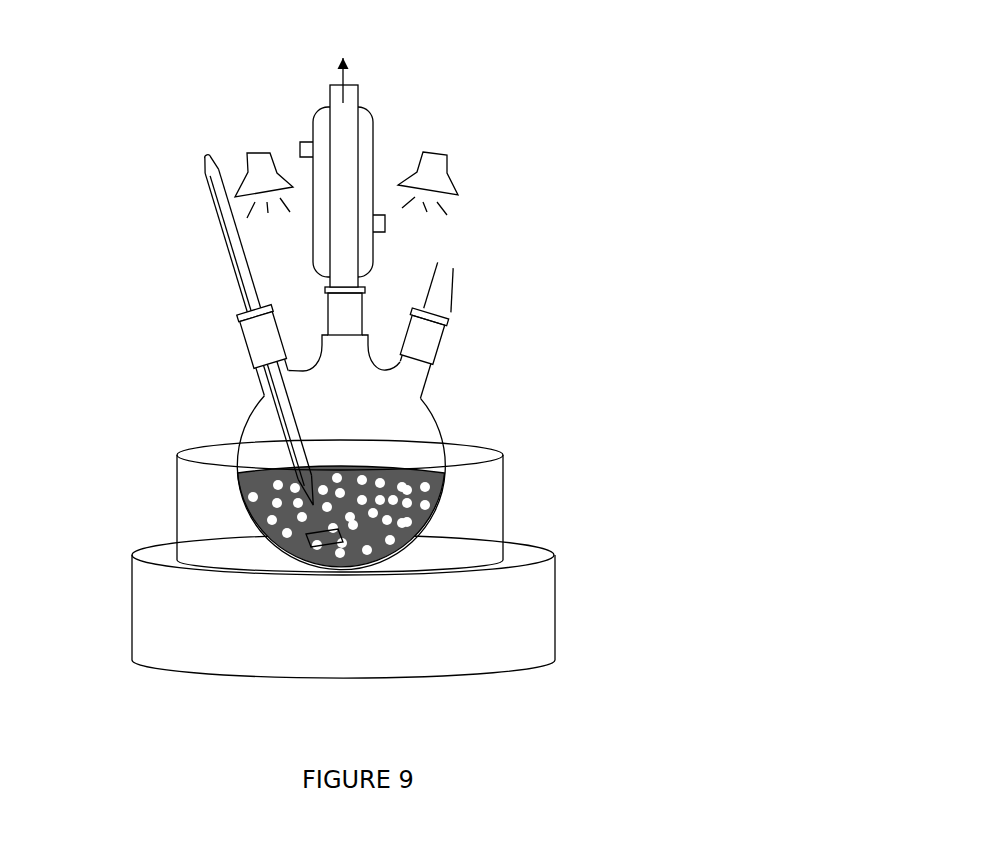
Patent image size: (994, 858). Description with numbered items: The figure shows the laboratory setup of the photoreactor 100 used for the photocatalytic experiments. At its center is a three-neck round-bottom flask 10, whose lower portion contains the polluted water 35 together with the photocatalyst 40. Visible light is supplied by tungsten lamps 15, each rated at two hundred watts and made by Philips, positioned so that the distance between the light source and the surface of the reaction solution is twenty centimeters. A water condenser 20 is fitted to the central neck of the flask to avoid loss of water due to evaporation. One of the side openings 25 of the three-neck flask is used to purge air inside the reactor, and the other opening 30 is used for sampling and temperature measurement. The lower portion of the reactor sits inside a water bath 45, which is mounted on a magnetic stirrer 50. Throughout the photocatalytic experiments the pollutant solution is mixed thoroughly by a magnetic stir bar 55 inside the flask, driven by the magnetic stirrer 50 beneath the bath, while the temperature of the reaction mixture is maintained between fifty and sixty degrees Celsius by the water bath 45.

The photoreactor 100 is at (556, 63).
The three-neck round-bottom flask 10 is at (248, 412).
The tungsten lamps 15 is at (443, 141).
The water condenser 20 is at (371, 110).
The opening 25 is at (443, 286).
The opening 30 is at (226, 322).
The polluted water 35 is at (266, 535).
The photocatalyst 40 is at (250, 500).
The water bath 45 is at (493, 445).
The magnetic stirrer 50 is at (550, 540).
The magnetic stir bar 55 is at (397, 547).